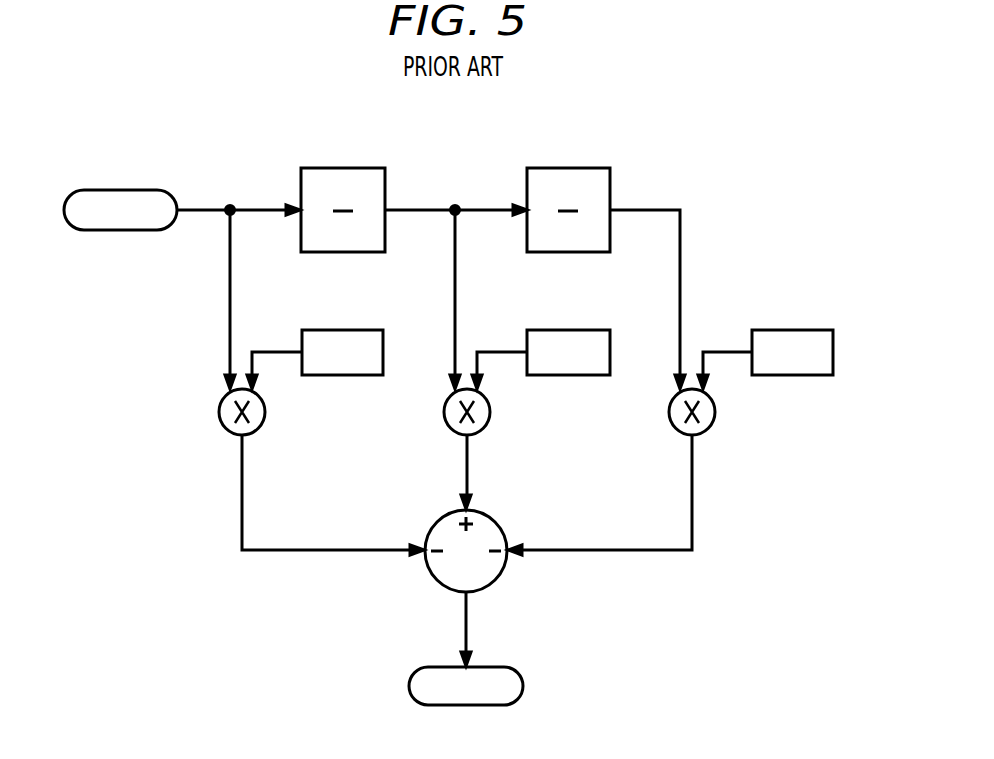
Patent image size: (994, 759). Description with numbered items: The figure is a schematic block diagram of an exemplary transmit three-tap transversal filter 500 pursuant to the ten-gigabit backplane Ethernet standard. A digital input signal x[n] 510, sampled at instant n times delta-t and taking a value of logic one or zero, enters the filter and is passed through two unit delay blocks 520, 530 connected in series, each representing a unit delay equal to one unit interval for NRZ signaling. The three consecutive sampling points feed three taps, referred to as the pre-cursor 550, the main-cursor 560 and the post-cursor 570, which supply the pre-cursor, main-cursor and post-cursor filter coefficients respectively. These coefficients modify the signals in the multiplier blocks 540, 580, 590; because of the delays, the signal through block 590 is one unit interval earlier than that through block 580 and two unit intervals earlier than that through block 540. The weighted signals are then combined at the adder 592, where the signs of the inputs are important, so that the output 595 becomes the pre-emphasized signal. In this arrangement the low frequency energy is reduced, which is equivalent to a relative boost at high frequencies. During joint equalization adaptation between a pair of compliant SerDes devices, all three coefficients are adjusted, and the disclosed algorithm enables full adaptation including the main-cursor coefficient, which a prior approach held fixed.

The TX 3-tap transversal filter 500 is at (760, 157).
The x[n] 510 is at (120, 191).
The unit delay block 520 is at (344, 168).
The unit delay block 530 is at (558, 168).
The pre-cursor multiplier block 540 is at (223, 429).
The pre-cursor 550 is at (340, 375).
The main-cursor 560 is at (565, 375).
The post-cursor 570 is at (790, 375).
The main-cursor multiplier block 580 is at (449, 429).
The post-cursor multiplier block 590 is at (673, 429).
The adder 592 is at (435, 579).
The output 595 is at (523, 686).